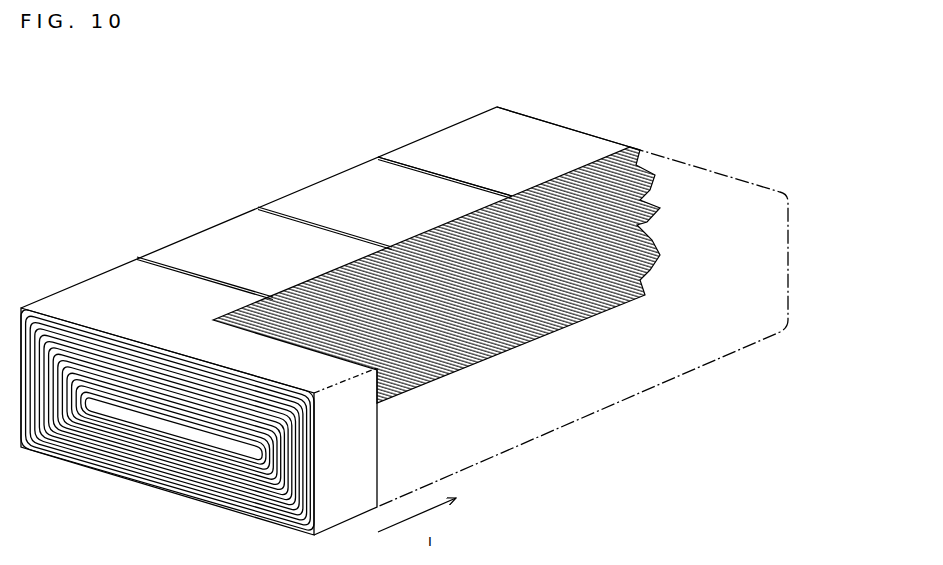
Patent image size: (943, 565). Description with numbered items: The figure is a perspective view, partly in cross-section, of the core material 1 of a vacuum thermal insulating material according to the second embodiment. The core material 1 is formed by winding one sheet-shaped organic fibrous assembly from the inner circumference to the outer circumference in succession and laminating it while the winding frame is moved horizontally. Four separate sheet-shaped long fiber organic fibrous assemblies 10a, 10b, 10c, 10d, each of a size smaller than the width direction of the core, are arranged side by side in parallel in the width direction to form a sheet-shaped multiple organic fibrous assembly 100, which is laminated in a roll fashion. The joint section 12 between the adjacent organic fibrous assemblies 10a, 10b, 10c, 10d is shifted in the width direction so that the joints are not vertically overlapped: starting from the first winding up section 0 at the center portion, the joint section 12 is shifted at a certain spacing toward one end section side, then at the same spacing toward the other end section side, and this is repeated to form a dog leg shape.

The core material 1 is at (620, 115).
The multiple organic fibrous assembly 100 is at (77, 267).
The first winding up section 0 is at (637, 222).
The organic fibrous assembly 10a is at (112, 290).
The organic fibrous assembly 10b is at (224, 237).
The organic fibrous assembly 10c is at (338, 190).
The organic fibrous assembly 10d is at (525, 142).
The joint section 12 is at (422, 167).